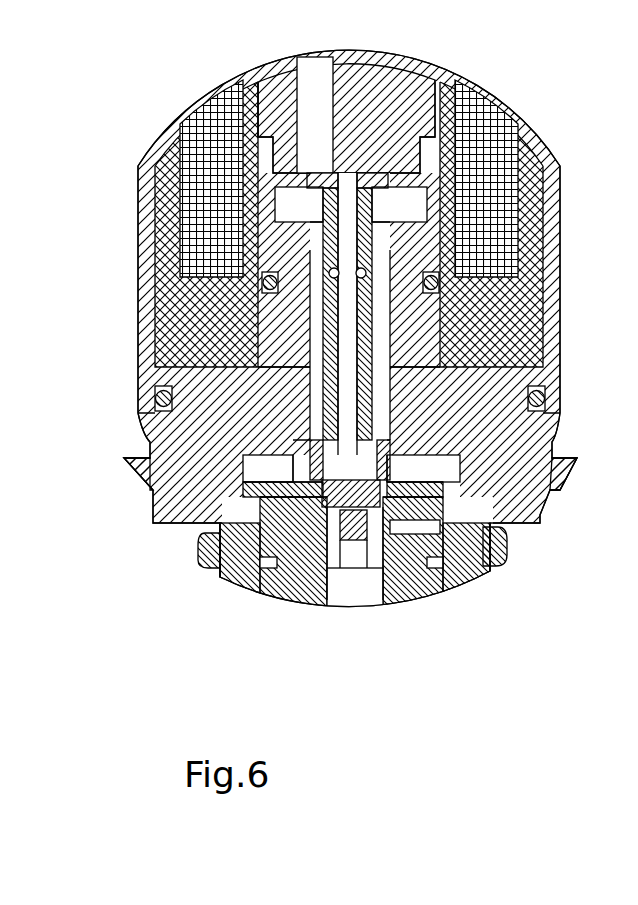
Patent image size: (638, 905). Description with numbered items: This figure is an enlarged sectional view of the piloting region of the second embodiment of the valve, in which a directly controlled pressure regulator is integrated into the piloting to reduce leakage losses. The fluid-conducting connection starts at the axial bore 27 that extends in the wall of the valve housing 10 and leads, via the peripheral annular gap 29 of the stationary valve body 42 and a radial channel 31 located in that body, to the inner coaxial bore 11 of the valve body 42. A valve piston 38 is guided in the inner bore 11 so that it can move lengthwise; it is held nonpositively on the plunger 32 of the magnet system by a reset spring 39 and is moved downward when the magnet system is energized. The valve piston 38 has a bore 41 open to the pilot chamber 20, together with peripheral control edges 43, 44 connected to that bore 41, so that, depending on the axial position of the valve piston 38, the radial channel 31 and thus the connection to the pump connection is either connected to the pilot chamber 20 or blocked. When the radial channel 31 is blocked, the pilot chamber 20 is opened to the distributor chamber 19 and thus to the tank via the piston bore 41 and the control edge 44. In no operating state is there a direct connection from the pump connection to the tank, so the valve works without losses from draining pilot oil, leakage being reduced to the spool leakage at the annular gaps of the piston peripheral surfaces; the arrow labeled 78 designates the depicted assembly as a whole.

The solenoid valve 78 is at (128, 150).
The plunger 32 is at (395, 80).
The reset spring 39 is at (323, 196).
The distributor chamber 19 is at (258, 473).
The valve piston 38 is at (143, 497).
The control edge 44 is at (547, 511).
The valve housing 10 is at (228, 548).
The axial bore 27 is at (435, 573).
The peripheral annular gap 29 is at (250, 577).
The valve body 42 is at (290, 522).
The control edge 43 is at (300, 507).
The inner coaxial bore 11 is at (350, 548).
The bore 41 is at (343, 560).
The pilot chamber 20 is at (375, 548).
The radial channel 31 is at (403, 540).